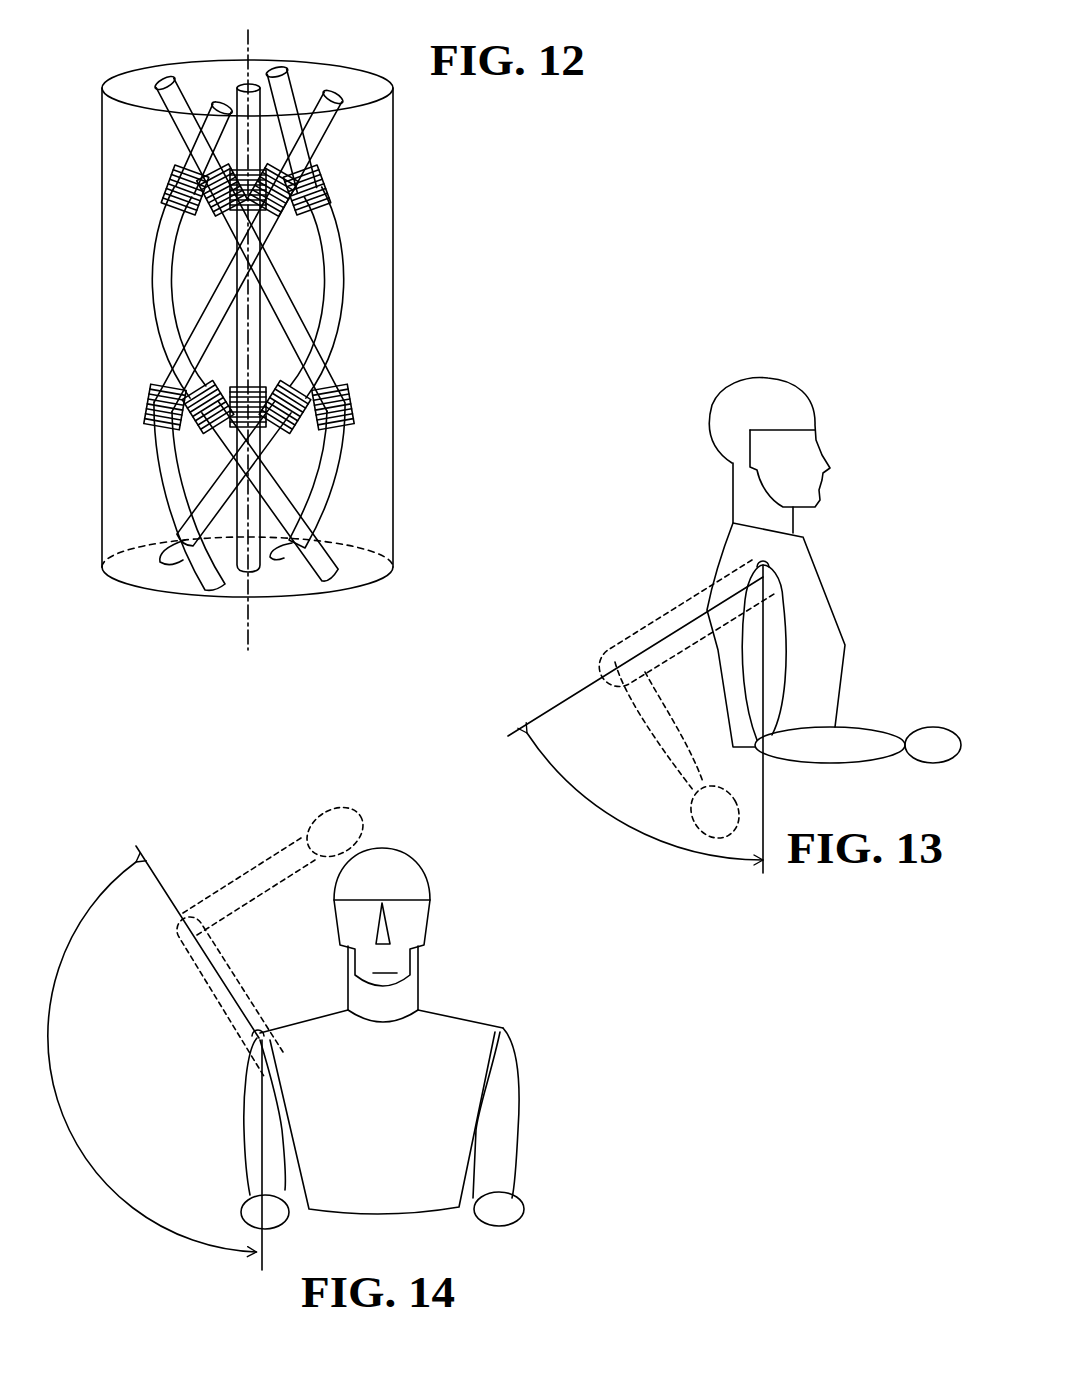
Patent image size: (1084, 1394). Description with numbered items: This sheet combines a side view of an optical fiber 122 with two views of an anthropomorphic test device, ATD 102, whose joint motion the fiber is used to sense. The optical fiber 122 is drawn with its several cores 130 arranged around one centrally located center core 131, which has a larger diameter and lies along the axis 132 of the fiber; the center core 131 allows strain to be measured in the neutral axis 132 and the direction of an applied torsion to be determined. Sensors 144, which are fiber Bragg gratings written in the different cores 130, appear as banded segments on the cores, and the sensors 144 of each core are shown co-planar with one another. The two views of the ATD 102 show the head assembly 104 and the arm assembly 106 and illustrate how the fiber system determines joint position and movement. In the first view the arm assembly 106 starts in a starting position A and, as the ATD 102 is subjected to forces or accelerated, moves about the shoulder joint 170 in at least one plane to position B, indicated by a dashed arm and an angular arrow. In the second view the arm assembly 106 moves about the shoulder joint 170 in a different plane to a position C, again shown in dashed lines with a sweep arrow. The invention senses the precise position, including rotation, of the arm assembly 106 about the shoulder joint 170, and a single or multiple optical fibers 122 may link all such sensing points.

In FIG. 12, the optical fiber 122 is at (101, 285).
In FIG. 12, the cores 130 is at (222, 102).
In FIG. 12, the center core 131 is at (263, 437).
In FIG. 12, the axis 132 is at (256, 606).
In FIG. 12, the sensors 144 is at (183, 180).
In FIG. 13, the ATD 102 is at (710, 428).
In FIG. 14, the ATD 102 is at (422, 1010).
In FIG. 13, the head assembly 104 is at (790, 382).
In FIG. 14, the head assembly 104 is at (407, 848).
In FIG. 13, the arm assembly 106 is at (784, 642).
In FIG. 14, the arm assembly 106 is at (521, 1108).
In FIG. 13, the shoulder joint 170 is at (766, 571).
In FIG. 14, the shoulder joint 170 is at (254, 1032).
In FIG. 13, the starting position A is at (870, 727).
In FIG. 14, the starting position A is at (244, 1191).
In FIG. 13, the position B is at (652, 740).
In FIG. 14, the position C is at (228, 874).